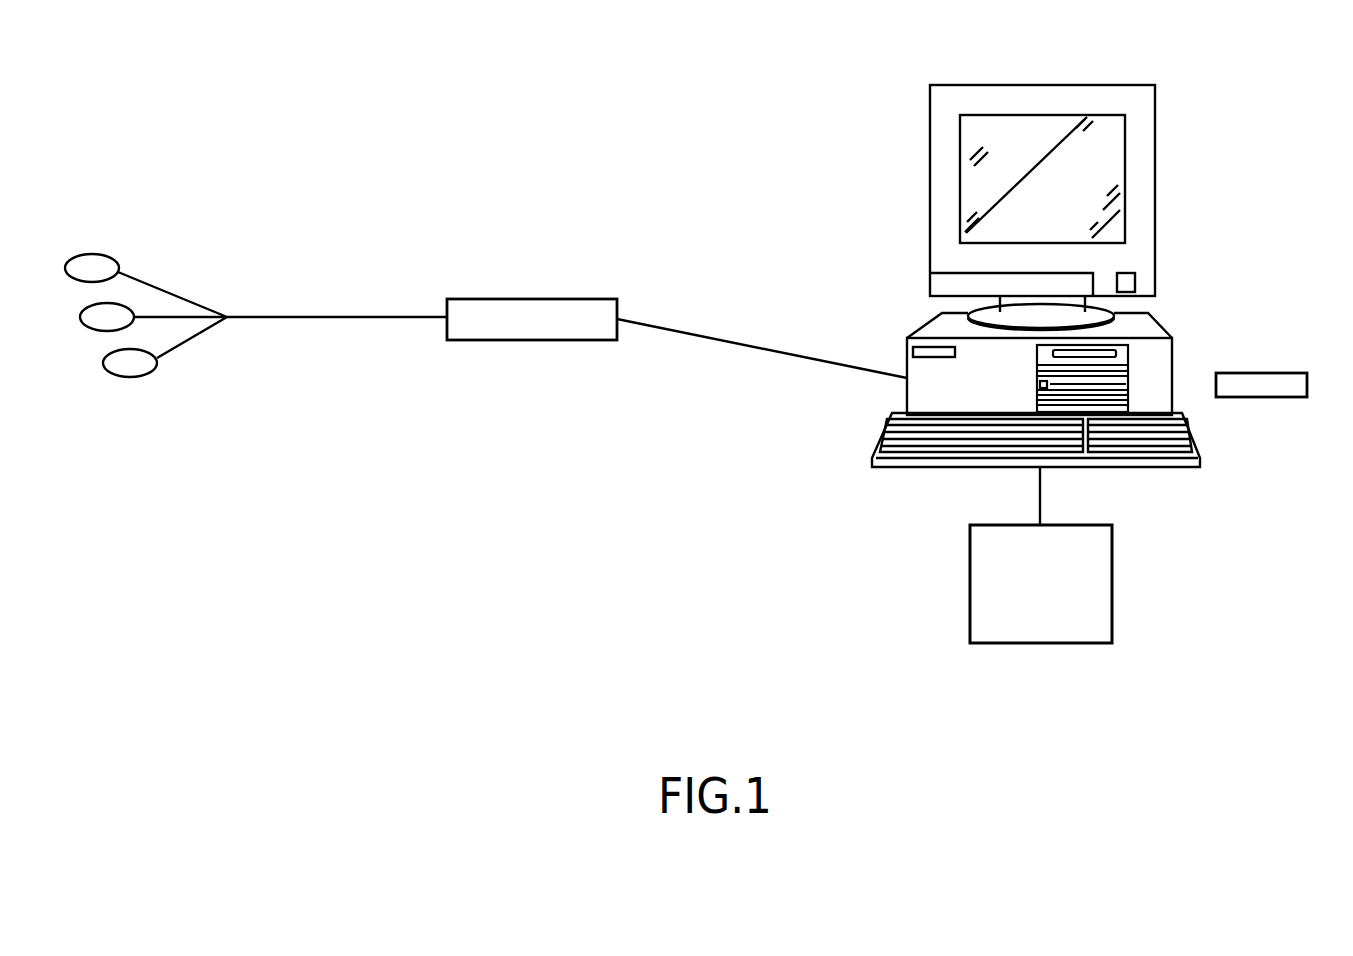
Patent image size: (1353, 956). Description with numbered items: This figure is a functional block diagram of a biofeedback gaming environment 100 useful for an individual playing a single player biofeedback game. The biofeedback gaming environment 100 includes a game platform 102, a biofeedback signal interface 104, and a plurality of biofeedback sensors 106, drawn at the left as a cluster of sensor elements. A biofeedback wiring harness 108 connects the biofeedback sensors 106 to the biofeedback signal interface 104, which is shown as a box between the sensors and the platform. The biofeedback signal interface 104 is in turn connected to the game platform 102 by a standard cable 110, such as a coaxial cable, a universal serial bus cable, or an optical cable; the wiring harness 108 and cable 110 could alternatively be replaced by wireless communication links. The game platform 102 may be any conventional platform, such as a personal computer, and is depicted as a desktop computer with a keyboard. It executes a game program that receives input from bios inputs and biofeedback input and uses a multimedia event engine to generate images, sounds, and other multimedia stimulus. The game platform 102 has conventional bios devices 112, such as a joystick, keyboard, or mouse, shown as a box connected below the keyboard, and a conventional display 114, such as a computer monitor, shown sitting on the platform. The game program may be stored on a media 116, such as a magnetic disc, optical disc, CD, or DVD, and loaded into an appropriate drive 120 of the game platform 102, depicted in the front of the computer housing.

The biofeedback gaming environment 100 is at (1143, 710).
The game platform 102 is at (1172, 352).
The biofeedback signal interface 104 is at (535, 340).
The biofeedback sensors 106 is at (150, 375).
The biofeedback wiring harness 108 is at (267, 317).
The standard cable 110 is at (775, 348).
The bios devices 112 is at (1112, 568).
The display 114 is at (1155, 223).
The media 116 is at (1275, 397).
The drive 120 is at (1128, 383).